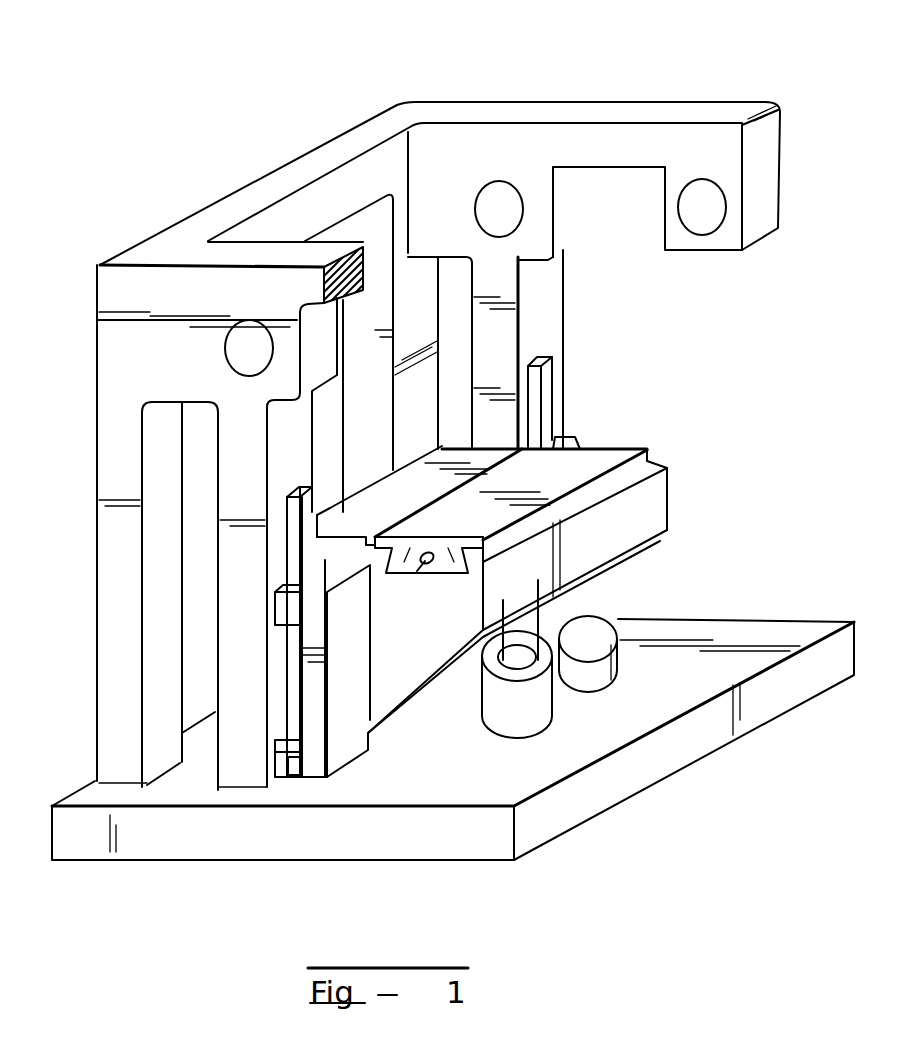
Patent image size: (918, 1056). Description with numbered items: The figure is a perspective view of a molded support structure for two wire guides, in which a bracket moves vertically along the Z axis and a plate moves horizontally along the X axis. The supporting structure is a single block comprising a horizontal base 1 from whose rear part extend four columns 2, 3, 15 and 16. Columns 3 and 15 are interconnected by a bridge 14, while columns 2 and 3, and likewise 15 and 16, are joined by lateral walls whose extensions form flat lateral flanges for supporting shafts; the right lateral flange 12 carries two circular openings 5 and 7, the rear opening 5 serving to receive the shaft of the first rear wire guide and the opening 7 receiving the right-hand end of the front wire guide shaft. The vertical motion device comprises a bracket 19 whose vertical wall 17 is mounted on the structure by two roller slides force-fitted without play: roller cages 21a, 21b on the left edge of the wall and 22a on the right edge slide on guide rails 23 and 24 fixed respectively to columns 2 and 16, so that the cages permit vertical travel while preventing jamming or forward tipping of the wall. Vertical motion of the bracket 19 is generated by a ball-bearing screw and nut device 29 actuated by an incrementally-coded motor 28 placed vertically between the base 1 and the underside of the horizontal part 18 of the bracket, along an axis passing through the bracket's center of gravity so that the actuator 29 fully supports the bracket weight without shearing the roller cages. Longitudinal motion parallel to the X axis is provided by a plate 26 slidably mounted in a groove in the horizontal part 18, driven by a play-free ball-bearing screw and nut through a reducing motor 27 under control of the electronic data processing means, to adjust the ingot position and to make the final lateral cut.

The horizontal base 1 is at (695, 736).
The column 2 is at (240, 732).
The column 3 is at (113, 747).
The circular opening 5 is at (502, 198).
The circular opening 7 is at (702, 195).
The right lateral flange 12 is at (598, 143).
The bridge 14 is at (325, 150).
The column 15 is at (419, 307).
The column 16 is at (540, 312).
The vertical wall 17 is at (342, 747).
The horizontal part 18 is at (360, 513).
The bracket 19 is at (398, 680).
The upper roller cage 21a is at (277, 608).
The lower roller cage 21b is at (280, 768).
The upper roller cage 22a is at (568, 435).
The guide rail 23 is at (293, 548).
The guide rail 24 is at (548, 387).
The plate 26 is at (575, 470).
The reducing motor 27 is at (428, 565).
The incrementally-coded motor 28 is at (597, 667).
The ball-bearing screw and nut device 29 is at (520, 700).